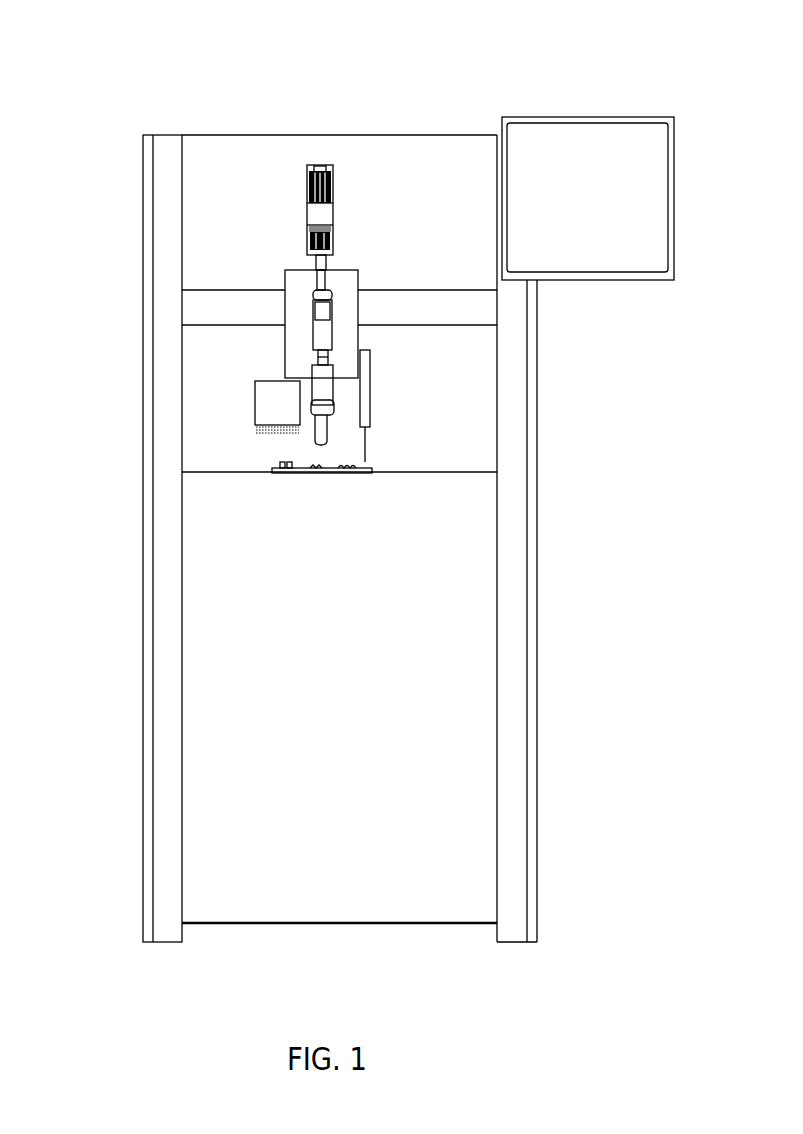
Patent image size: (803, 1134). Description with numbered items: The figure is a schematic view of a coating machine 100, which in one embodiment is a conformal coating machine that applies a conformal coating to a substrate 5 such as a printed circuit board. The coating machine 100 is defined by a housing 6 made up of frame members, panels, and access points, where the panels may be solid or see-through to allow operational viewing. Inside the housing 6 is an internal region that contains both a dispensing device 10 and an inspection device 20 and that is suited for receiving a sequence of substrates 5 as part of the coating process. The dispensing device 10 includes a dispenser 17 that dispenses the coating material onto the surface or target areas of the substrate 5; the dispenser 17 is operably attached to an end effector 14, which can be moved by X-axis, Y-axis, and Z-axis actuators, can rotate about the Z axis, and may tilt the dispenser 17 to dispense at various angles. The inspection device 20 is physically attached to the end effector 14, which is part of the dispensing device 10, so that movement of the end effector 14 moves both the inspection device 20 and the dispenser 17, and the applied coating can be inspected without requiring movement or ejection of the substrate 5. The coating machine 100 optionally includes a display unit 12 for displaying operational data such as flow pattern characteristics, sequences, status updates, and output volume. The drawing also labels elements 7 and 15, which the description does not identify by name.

The coating machine 100 is at (108, 63).
The housing 6 is at (168, 178).
The display monitor 7 is at (662, 194).
The dispensing device 10 is at (276, 312).
The display unit 12 is at (333, 175).
The end effector 14 is at (356, 270).
The cross beam 15 is at (472, 313).
The dispenser 17 is at (327, 398).
The inspection device 20 is at (255, 400).
The substrate 5 is at (365, 473).